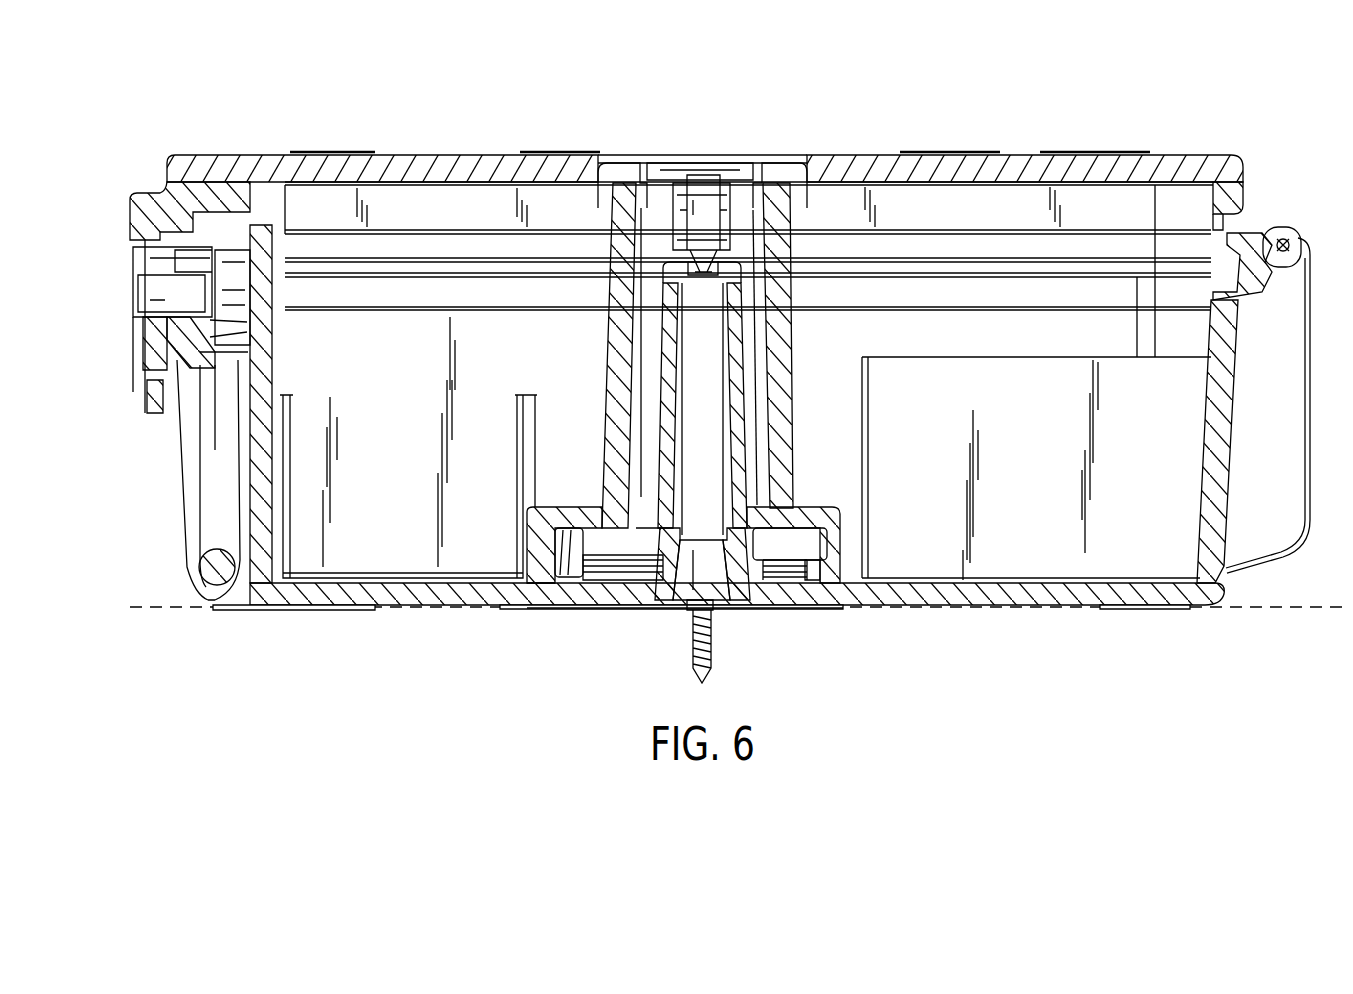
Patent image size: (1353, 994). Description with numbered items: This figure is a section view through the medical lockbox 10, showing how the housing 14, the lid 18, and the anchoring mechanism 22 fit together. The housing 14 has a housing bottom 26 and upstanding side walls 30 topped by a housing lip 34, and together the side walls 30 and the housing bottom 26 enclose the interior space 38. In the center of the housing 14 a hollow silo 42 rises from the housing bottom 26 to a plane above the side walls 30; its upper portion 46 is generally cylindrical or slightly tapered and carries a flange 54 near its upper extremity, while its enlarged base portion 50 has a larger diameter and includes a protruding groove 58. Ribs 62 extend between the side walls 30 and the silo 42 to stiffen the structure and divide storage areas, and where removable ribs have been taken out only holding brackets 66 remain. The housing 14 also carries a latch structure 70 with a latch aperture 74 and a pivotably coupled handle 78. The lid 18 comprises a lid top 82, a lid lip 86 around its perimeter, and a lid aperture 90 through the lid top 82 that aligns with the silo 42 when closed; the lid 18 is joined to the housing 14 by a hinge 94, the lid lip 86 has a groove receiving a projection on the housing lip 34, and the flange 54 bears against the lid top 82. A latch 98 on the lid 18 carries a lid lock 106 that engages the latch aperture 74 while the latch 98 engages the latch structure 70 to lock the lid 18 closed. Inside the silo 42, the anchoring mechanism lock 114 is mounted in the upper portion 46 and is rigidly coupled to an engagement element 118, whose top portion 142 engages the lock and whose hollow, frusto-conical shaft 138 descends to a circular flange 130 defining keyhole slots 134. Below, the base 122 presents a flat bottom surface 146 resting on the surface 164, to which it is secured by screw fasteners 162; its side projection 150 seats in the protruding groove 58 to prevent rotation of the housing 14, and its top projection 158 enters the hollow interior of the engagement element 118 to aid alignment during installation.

The medical lockbox 10 is at (568, 70).
The housing 14 is at (1273, 517).
The lid 18 is at (905, 165).
The anchoring mechanism 22 is at (750, 397).
The housing bottom 26 is at (740, 623).
The side walls 30 is at (262, 370).
The housing lip 34 is at (1237, 235).
The interior space 38 is at (1002, 455).
The silo 42 is at (785, 322).
The upper portion 46 is at (780, 290).
The enlarged base portion 50 is at (832, 545).
The flange 54 is at (775, 160).
The protruding groove 58 is at (565, 550).
The ribs 62 is at (935, 370).
The holding brackets 66 is at (520, 448).
The latch structure 70 is at (225, 375).
The latch aperture 74 is at (205, 335).
The handle 78 is at (222, 585).
The lid top 82 is at (400, 167).
The lid lip 86 is at (1238, 190).
The lid aperture 90 is at (617, 160).
The hinge 94 is at (1290, 240).
The latch 98 is at (145, 395).
The lid lock 106 is at (145, 292).
The anchoring mechanism lock 114 is at (705, 160).
The engagement element 118 is at (745, 447).
The base 122 is at (635, 605).
The circular flange 130 is at (748, 510).
The keyhole slot 134 is at (780, 565).
The shaft 138 is at (665, 430).
The top portion 142 is at (720, 260).
The bottom surface 146 is at (780, 605).
The side projection 150 is at (572, 590).
The top projection 158 is at (713, 535).
The fasteners 162 is at (715, 640).
The surface 164 is at (1285, 610).